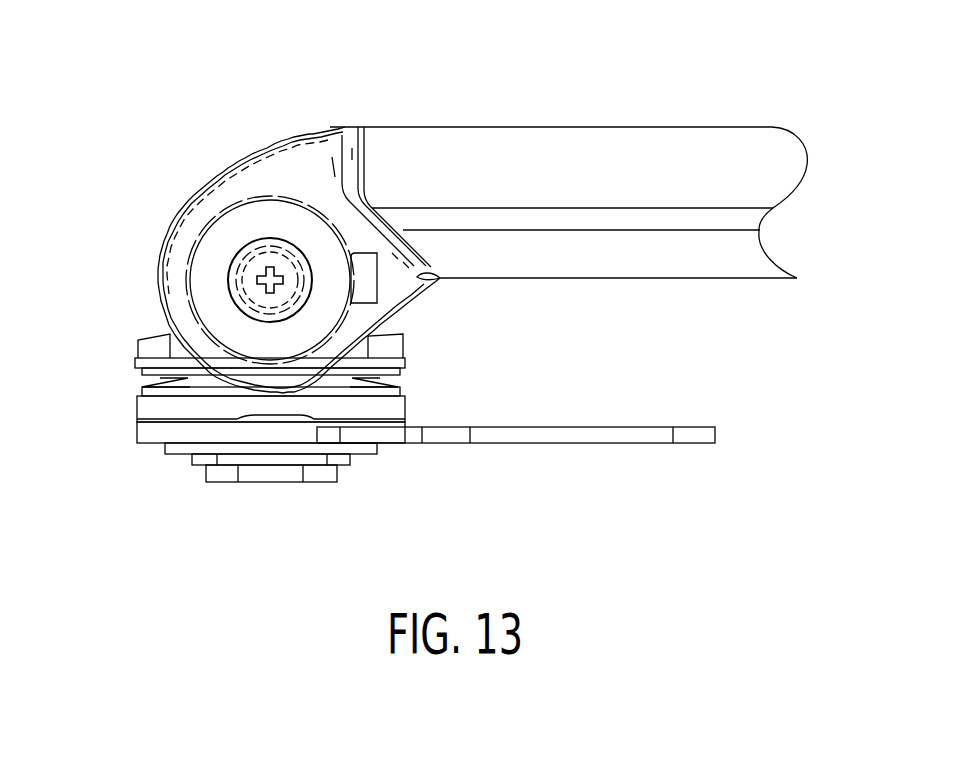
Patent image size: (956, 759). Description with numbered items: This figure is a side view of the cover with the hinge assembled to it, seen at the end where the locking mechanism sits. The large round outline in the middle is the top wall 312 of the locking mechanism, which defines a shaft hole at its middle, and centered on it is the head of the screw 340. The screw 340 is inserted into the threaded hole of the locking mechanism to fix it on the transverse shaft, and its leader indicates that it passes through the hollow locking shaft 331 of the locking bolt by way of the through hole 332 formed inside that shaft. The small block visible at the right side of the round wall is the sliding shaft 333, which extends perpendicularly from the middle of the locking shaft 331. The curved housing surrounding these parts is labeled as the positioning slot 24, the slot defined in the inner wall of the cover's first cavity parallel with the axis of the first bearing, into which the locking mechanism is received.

The positioning slot 24 is at (395, 300).
The top wall 312 is at (212, 250).
The locking shaft 331 is at (230, 281).
The through hole 332 is at (250, 307).
The sliding shaft 333 is at (360, 266).
The screw 340 is at (262, 267).